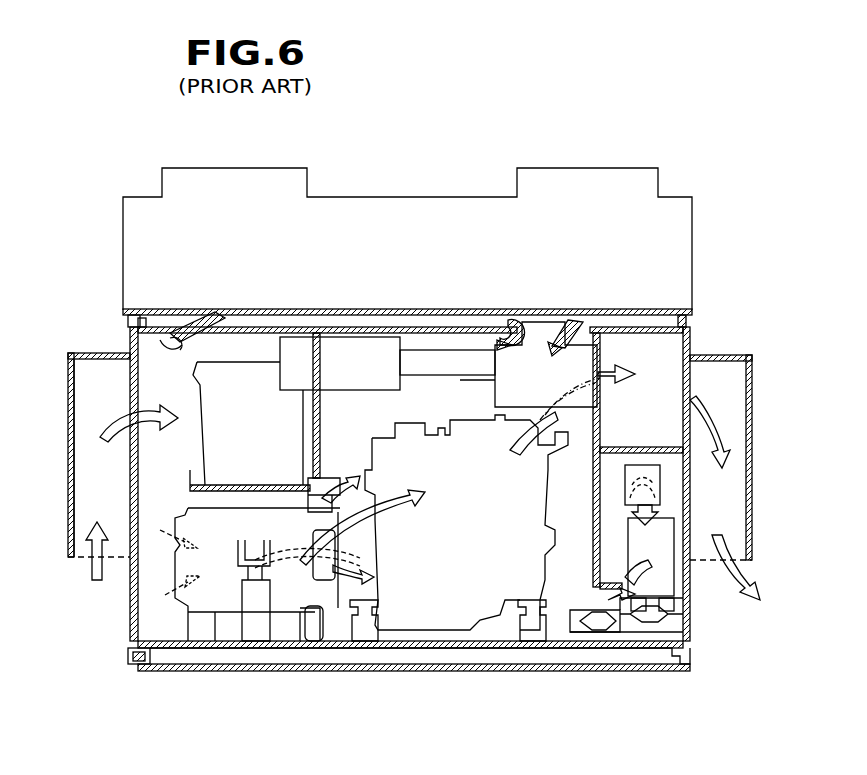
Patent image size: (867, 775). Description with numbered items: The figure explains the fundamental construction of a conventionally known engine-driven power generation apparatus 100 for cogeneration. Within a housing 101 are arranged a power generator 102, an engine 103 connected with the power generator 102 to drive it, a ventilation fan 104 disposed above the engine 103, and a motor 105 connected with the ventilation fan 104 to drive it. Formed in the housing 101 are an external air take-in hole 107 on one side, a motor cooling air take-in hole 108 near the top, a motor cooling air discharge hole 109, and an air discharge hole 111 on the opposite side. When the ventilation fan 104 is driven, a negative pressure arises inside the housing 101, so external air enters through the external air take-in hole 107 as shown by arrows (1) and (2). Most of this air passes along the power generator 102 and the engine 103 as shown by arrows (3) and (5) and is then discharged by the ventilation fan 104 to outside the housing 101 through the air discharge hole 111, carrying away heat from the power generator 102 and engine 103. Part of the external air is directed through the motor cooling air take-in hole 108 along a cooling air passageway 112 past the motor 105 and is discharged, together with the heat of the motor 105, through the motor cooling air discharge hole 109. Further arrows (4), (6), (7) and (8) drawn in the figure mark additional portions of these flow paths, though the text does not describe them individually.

The engine-driven power generation apparatus 100 is at (440, 128).
The housing 101 is at (132, 622).
The power generator 102 is at (238, 652).
The engine 103 is at (446, 640).
The ventilation fan 104 is at (495, 378).
The motor 105 is at (537, 322).
The external air take-in hole 107 is at (108, 362).
The motor cooling air take-in hole 108 is at (182, 325).
The motor cooling air discharge hole 109 is at (588, 330).
The air discharge hole 111 is at (700, 357).
The cooling air passageway 112 is at (351, 309).
The arrow 1 is at (89, 569).
The arrow 2 is at (129, 436).
The arrow 3 is at (168, 563).
The air flow 4 is at (304, 540).
The arrow 5 is at (362, 519).
The air flow 6 is at (516, 441).
The air flow 7 is at (164, 354).
The air flow 8 is at (548, 352).